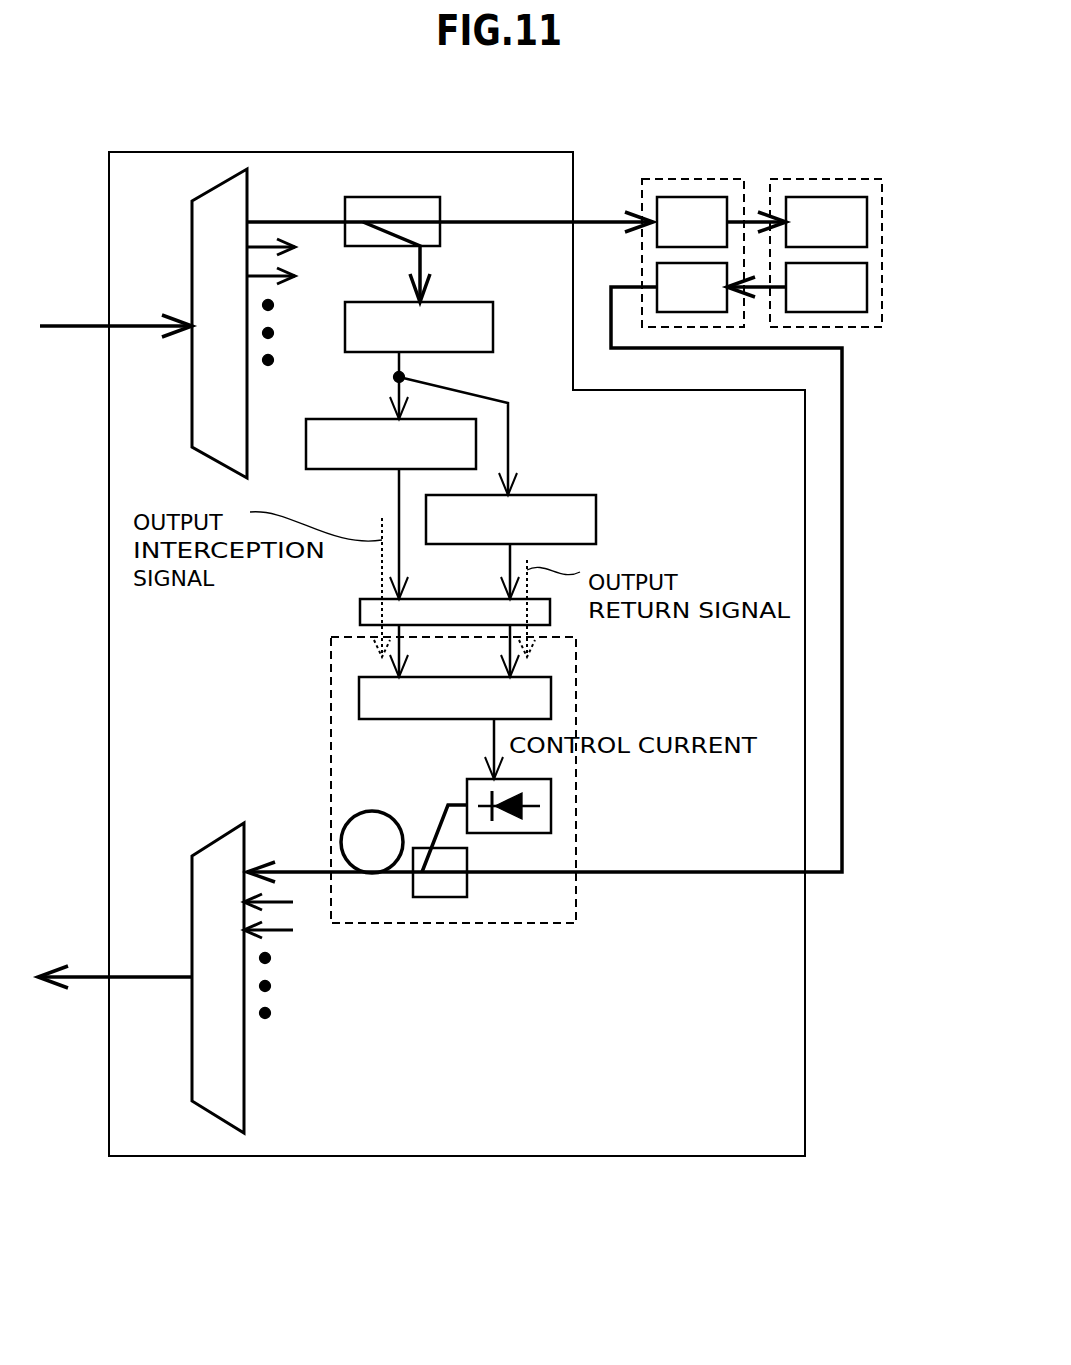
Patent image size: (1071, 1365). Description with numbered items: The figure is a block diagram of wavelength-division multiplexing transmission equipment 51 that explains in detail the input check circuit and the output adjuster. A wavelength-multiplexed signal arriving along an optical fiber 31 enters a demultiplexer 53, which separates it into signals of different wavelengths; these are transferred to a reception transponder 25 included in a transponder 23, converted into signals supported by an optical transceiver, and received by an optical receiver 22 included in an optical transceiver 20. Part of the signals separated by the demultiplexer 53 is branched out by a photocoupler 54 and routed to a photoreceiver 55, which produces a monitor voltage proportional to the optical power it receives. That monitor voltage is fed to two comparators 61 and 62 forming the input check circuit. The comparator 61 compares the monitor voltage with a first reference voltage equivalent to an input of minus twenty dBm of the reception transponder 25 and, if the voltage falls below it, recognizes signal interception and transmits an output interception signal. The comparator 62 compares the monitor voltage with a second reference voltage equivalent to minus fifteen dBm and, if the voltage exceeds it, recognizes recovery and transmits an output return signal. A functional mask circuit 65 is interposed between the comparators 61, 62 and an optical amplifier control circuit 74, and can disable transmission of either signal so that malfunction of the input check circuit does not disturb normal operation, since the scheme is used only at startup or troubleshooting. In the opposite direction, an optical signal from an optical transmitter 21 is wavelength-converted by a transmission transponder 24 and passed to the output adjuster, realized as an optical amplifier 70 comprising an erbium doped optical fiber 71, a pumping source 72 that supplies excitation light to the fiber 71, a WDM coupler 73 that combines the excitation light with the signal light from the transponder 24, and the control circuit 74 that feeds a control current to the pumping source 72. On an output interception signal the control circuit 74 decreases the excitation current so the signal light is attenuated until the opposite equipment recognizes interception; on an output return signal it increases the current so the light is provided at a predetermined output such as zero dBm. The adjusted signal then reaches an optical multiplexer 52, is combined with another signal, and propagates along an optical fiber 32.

The optical transceiver 20 is at (825, 179).
The optical transmitter 21 is at (867, 283).
The optical receiver 22 is at (867, 218).
The transponder 23 is at (700, 179).
The transmission transponder 24 is at (682, 312).
The reception transponder 25 is at (668, 197).
The optical fiber 31 is at (78, 320).
The optical fiber 32 is at (90, 983).
The wavelength-division multiplexing transmission equipment 51 is at (447, 1157).
The optical multiplexer 52 is at (192, 885).
The demultiplexer 53 is at (192, 412).
The photocoupler 54 is at (385, 197).
The photoreceiver 55 is at (493, 325).
The comparator 61 is at (476, 437).
The comparator 62 is at (596, 505).
The functional mask circuit 65 is at (358, 608).
The optical amplifier 70 is at (487, 923).
The erbium doped optical fiber 71 is at (350, 822).
The pumping source 72 is at (551, 815).
The WDM coupler 73 is at (467, 888).
The optical amplifier control circuit 74 is at (551, 702).